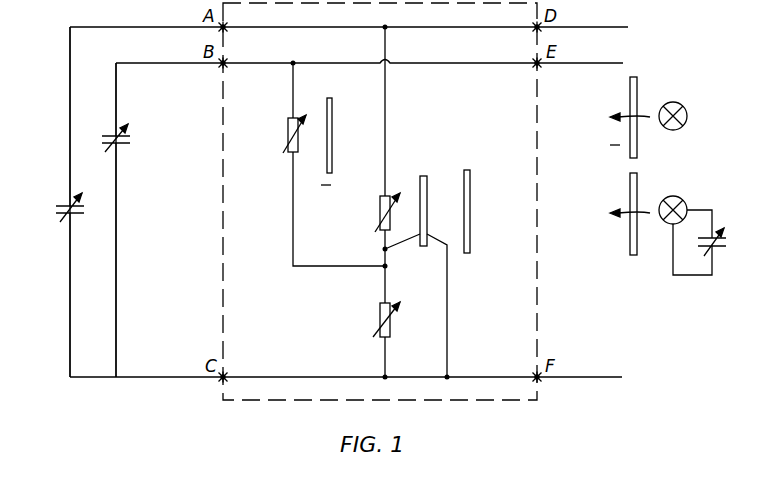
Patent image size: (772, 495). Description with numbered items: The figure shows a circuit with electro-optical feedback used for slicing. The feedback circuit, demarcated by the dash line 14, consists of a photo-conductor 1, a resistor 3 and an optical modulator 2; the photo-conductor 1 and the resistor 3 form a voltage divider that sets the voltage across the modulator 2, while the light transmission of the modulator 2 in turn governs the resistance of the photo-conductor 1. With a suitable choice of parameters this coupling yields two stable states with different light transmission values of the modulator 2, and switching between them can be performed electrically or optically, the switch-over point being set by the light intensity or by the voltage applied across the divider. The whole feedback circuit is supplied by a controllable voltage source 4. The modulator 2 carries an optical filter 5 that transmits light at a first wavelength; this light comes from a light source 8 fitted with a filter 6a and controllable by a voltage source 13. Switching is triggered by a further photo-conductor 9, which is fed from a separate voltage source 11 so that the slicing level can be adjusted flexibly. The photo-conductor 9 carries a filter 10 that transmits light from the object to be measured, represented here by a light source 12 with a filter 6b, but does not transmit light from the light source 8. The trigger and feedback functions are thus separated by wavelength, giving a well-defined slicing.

The photo-conductor 1 is at (389, 193).
The optical modulator 2 is at (426, 176).
The resistor 3 is at (380, 318).
The voltage source 4 is at (65, 205).
The optical filter 5 is at (470, 166).
The filter 6a is at (637, 175).
The filter 6b is at (637, 79).
The light source 8 is at (683, 198).
The photo-conductor 9 is at (288, 130).
The filter 10 is at (332, 137).
The variable capacitor 11 is at (120, 145).
The light source 12 is at (683, 104).
The voltage source 13 is at (714, 250).
The dash line 14 is at (537, 322).